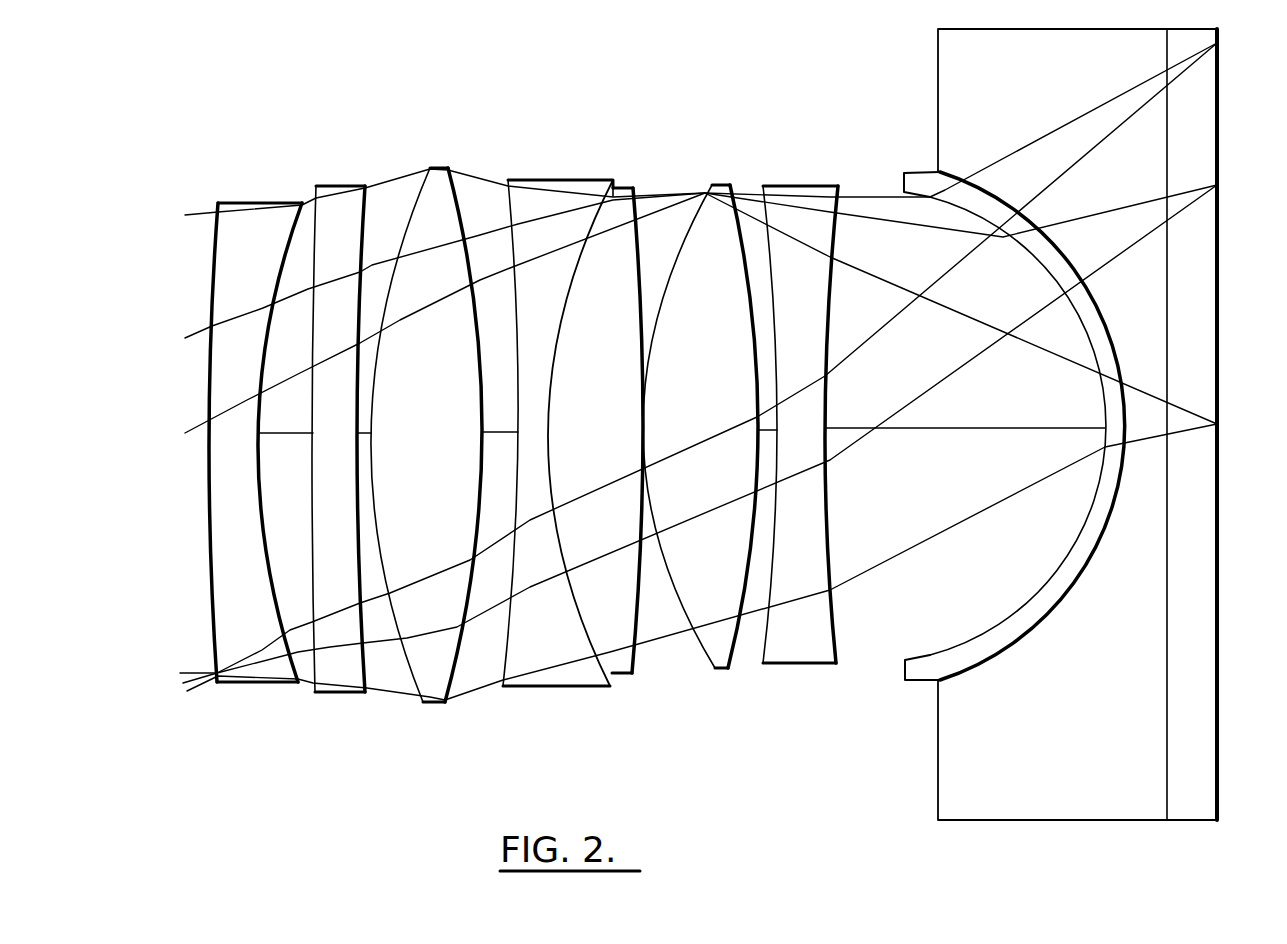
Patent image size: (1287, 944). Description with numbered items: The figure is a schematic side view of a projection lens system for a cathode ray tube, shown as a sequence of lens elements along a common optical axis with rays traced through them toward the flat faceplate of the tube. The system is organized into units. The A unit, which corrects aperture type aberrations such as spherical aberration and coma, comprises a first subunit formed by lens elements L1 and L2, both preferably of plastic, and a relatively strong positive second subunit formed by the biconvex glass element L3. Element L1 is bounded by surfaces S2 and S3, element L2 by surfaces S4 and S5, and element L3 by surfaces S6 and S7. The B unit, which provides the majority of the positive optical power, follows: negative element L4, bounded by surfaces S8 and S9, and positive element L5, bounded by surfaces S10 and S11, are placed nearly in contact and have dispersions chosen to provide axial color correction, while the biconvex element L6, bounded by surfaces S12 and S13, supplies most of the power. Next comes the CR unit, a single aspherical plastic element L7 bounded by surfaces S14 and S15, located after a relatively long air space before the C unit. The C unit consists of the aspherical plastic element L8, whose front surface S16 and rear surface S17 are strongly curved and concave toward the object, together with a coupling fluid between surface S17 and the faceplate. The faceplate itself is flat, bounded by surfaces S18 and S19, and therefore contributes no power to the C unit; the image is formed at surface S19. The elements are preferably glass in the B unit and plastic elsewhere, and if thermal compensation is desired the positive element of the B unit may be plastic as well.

The lens element L1 is at (243, 225).
The lens element L2 is at (340, 225).
The lens element L3 is at (437, 200).
The lens element L4 is at (548, 207).
The lens element L5 is at (620, 207).
The biconvex element L6 is at (715, 200).
The aspherical lens element L7 is at (801, 207).
The aspherical plastic lens element L8 is at (922, 182).
The surface S2 is at (212, 575).
The surface S3 is at (219, 622).
The surface S4 is at (312, 675).
The surface S5 is at (364, 670).
The surface S6 is at (407, 665).
The surface S7 is at (455, 700).
The surface S8 is at (503, 660).
The surface S9 is at (585, 630).
The surface S10 is at (628, 658).
The surface S11 is at (638, 650).
The surface S12 is at (683, 632).
The surface S13 is at (740, 648).
The surface S14 is at (763, 643).
The surface S15 is at (836, 650).
The surface S16 is at (948, 647).
The surface S17 is at (972, 668).
The surface S18 is at (1167, 760).
The surface S19 is at (1219, 790).